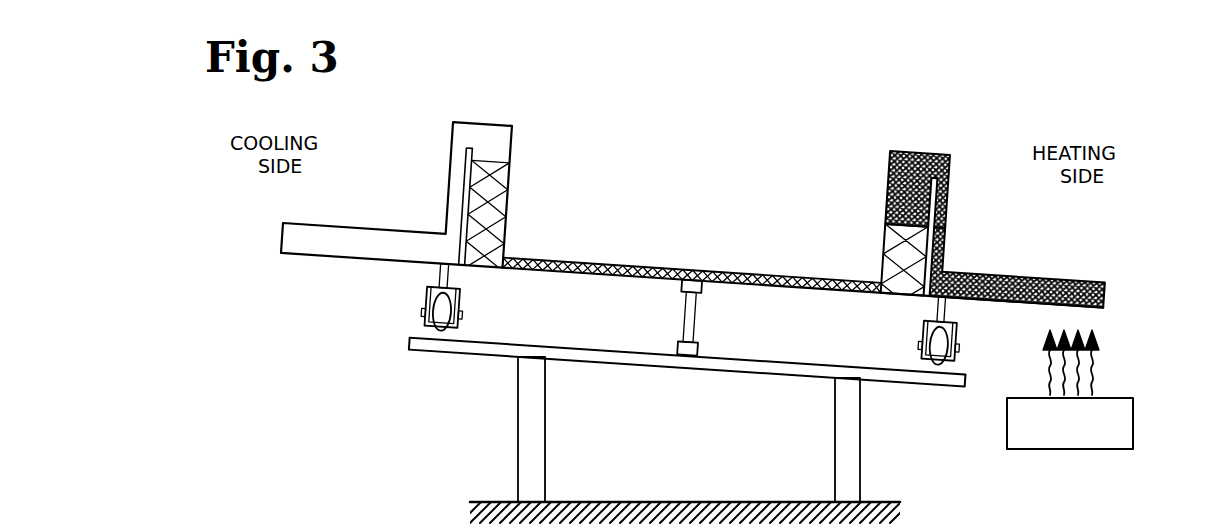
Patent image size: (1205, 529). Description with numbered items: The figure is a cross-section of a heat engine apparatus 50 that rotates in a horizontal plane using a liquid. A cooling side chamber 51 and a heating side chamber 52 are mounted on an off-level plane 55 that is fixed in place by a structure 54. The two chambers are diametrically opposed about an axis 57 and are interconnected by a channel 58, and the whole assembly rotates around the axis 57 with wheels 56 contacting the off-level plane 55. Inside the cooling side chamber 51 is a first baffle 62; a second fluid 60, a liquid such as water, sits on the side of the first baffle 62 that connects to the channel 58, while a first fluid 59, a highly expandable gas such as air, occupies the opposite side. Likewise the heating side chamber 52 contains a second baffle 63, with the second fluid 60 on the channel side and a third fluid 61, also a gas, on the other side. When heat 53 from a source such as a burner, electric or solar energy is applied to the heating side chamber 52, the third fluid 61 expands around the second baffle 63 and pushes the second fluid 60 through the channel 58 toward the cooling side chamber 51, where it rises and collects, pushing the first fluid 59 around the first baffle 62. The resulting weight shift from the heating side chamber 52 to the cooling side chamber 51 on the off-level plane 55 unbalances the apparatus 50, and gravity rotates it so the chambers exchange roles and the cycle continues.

The apparatus 50 is at (1113, 69).
The cooling side chamber 51 is at (447, 205).
The heating side chamber 52 is at (886, 216).
The heat 53 is at (1134, 431).
The structure 54 is at (518, 458).
The off-level plane 55 is at (712, 373).
The wheels 56 is at (437, 332).
The axis 57 is at (687, 326).
The channel 58 is at (570, 262).
The first fluid 59 is at (463, 138).
The second fluid 60 is at (765, 277).
The third fluid 61 is at (946, 223).
The first baffle 62 is at (476, 152).
The second baffle 63 is at (892, 163).